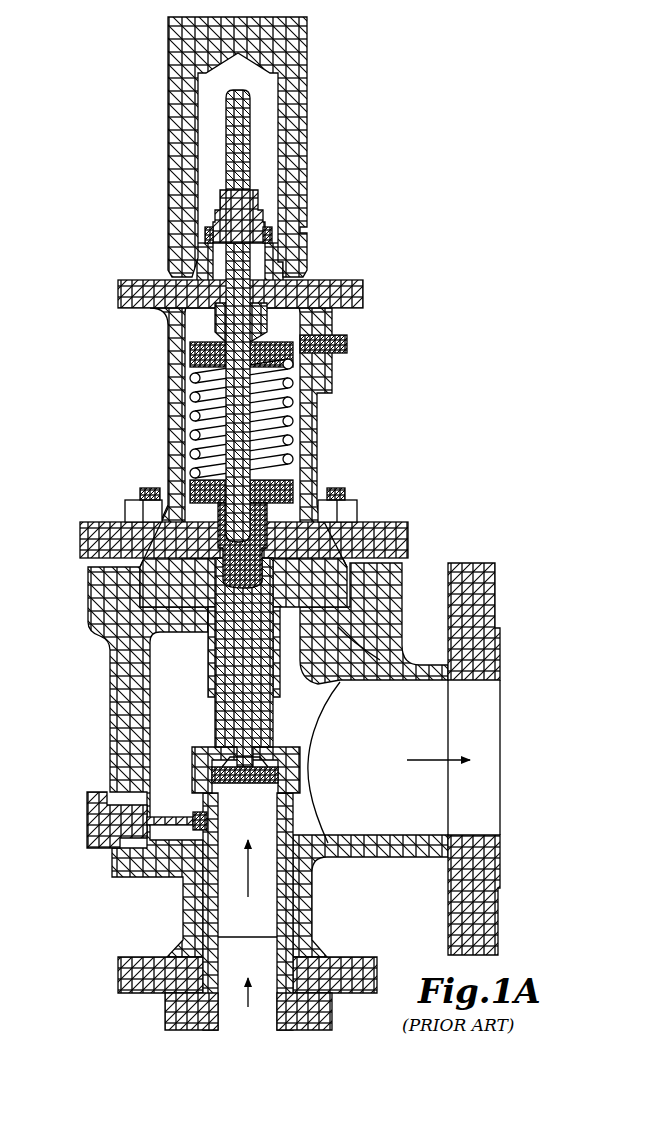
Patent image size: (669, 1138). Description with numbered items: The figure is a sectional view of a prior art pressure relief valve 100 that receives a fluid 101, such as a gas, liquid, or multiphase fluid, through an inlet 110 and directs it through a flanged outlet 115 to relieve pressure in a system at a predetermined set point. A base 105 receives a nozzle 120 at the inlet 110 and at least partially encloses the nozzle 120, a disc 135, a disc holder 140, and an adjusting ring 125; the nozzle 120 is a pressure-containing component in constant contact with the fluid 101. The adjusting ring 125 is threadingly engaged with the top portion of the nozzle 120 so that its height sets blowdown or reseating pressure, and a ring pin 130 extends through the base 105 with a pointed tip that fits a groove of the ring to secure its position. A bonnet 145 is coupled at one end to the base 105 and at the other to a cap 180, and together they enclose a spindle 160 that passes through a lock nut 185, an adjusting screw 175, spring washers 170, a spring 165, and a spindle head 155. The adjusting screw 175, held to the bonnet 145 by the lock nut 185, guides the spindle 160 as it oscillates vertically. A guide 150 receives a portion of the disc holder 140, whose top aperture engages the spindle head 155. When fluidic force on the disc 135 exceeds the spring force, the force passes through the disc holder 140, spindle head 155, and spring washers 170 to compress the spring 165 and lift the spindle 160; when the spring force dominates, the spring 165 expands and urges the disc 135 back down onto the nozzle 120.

The pressure relief valve 100 is at (392, 147).
The fluid 101 is at (430, 762).
The base 105 is at (118, 975).
The inlet 110 is at (249, 1010).
The outlet 115 is at (480, 732).
The nozzle 120 is at (163, 1020).
The adjusting ring 125 is at (195, 800).
The ring pin 130 is at (87, 827).
The disc 135 is at (278, 777).
The disc holder 140 is at (265, 713).
The bonnet 145 is at (363, 298).
The guide 150 is at (147, 592).
The spindle head 155 is at (218, 520).
The spindle 160 is at (250, 122).
The spring 165 is at (190, 428).
The spring washers 170 is at (190, 350).
The adjusting screw 175 is at (258, 205).
The cap 180 is at (168, 93).
The lock nut 185 is at (210, 235).